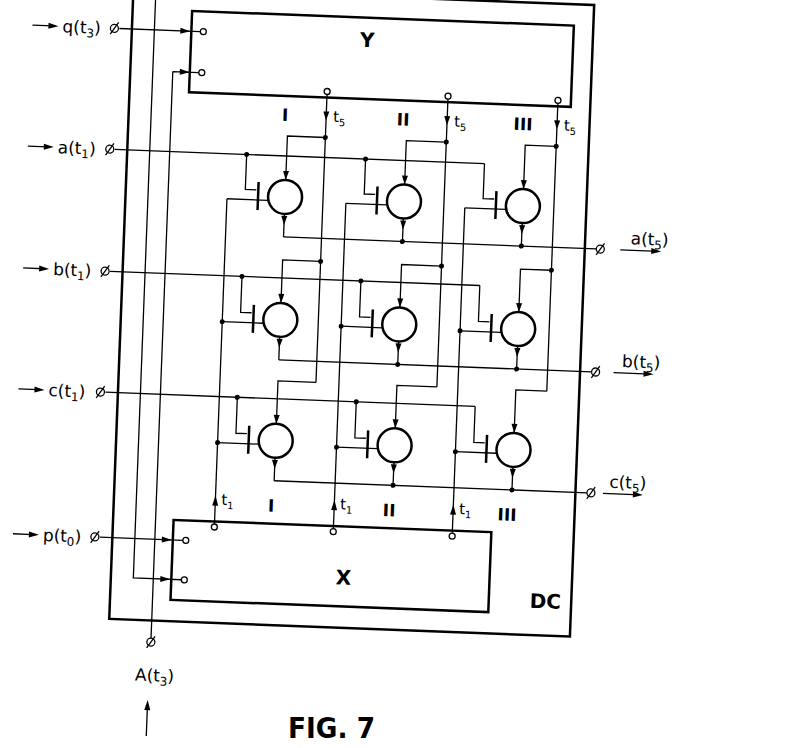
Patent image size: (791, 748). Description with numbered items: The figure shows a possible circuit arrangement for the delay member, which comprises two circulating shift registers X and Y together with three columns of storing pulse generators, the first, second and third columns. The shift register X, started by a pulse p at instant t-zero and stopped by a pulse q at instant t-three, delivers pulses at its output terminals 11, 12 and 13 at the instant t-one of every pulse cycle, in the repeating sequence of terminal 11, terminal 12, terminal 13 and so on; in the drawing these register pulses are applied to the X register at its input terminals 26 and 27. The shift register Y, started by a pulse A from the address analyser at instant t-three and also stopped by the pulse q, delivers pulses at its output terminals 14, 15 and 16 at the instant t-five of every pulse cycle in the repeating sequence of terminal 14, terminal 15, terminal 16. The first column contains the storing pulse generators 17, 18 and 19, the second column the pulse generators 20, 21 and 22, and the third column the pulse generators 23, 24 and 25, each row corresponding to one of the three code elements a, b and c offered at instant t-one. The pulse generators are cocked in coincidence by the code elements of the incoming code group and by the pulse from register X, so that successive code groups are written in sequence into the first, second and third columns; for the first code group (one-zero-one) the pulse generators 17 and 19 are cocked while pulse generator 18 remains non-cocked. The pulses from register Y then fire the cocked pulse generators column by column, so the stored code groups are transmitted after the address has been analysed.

The output terminal 11 is at (220, 377).
The output terminal 12 is at (339, 382).
The output terminal 13 is at (458, 387).
The output terminal 14 is at (322, 224).
The output terminal 15 is at (443, 229).
The output terminal 16 is at (553, 233).
The storing pulse generator 17 is at (277, 184).
The storing pulse generator 18 is at (270, 308).
The storing pulse generator 19 is at (265, 431).
The storing pulse generator 20 is at (396, 191).
The storing pulse generator 21 is at (390, 314).
The storing pulse generator 22 is at (385, 436).
The storing pulse generator 23 is at (511, 194).
The storing pulse generator 24 is at (505, 318).
The storing pulse generator 25 is at (498, 441).
The input terminal of X register 26 is at (189, 551).
The input terminal of X register 27 is at (201, 581).